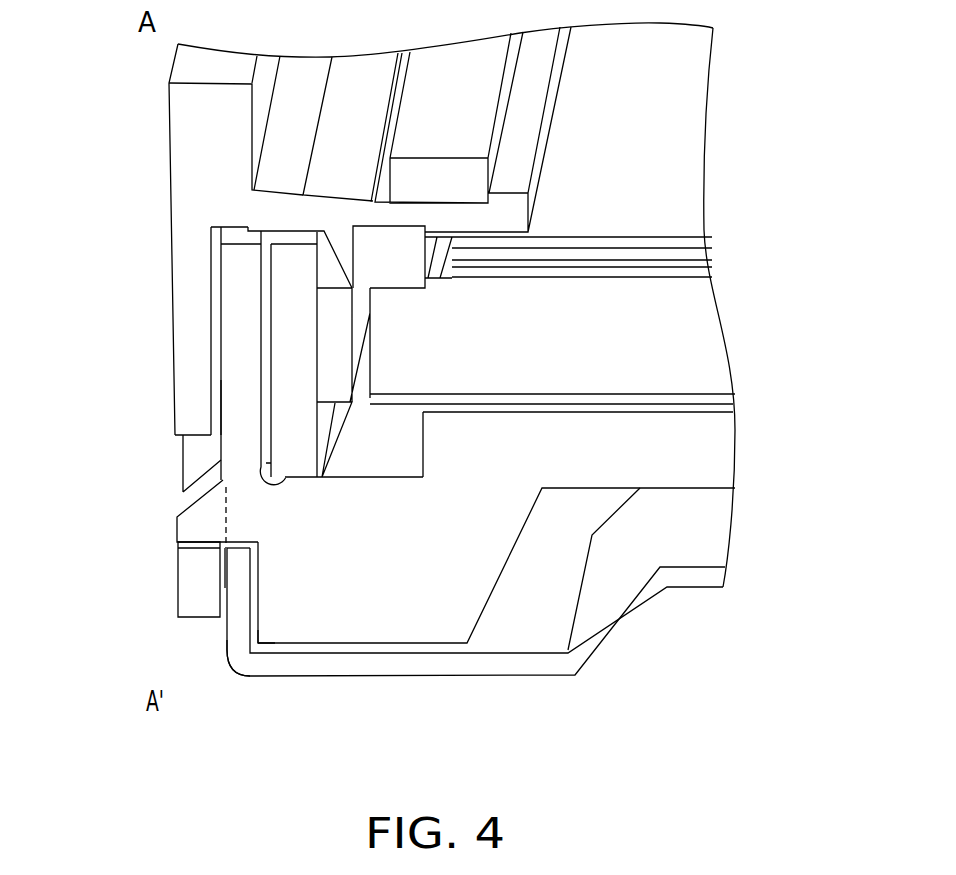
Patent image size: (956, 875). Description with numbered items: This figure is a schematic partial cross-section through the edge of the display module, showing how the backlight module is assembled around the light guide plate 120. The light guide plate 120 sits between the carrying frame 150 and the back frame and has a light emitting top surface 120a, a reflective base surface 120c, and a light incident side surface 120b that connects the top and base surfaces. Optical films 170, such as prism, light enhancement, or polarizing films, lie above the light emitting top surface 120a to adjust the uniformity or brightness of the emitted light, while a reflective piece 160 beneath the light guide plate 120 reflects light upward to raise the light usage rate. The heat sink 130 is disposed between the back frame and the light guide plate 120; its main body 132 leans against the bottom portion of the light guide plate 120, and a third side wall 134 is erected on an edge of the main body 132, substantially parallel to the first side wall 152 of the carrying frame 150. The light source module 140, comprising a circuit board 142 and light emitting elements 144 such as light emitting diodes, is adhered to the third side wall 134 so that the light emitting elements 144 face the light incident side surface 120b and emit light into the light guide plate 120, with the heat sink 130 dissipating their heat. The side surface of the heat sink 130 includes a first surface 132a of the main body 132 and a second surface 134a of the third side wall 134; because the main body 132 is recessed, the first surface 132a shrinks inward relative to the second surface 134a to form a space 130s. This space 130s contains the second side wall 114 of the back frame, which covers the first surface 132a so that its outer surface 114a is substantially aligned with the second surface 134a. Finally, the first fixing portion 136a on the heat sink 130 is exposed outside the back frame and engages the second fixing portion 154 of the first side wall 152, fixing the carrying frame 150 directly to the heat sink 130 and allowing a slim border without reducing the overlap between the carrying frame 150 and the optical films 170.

The carrying frame 150 is at (185, 113).
The first side wall 152 is at (188, 338).
The third side wall 134 is at (222, 371).
The second surface 134a is at (214, 393).
The second fixing portion 154 is at (197, 459).
The first fixing portion 136a is at (187, 528).
The light source module 140 is at (233, 351).
The circuit board 142 is at (278, 261).
The light emitting elements 144 is at (308, 302).
The light incident side surface 120b is at (362, 314).
The optical films 170 is at (742, 247).
The light guide plate 120 is at (601, 325).
The light emitting top surface 120a is at (668, 270).
The reflective base surface 120c is at (669, 402).
The reflective piece 160 is at (733, 398).
The heat sink 130 is at (527, 389).
The main body 132 is at (405, 622).
The space 130s is at (278, 578).
The first surface 132a is at (257, 645).
The second side wall 114 is at (412, 651).
The outer surface 114a is at (222, 660).